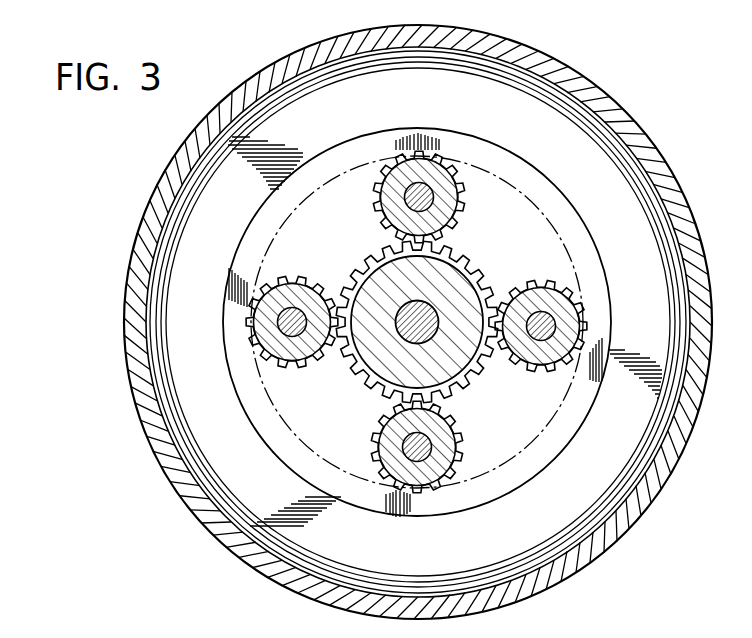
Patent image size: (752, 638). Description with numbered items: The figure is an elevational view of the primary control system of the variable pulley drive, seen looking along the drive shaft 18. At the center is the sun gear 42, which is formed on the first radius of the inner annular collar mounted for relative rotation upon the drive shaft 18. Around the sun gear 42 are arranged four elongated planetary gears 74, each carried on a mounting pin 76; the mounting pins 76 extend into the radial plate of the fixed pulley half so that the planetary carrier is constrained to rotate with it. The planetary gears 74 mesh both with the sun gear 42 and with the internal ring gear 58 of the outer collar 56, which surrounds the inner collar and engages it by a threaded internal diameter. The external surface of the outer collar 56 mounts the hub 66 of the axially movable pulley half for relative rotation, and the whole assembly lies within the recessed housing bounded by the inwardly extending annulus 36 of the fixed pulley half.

The drive shaft 18 is at (409, 292).
The inwardly extending annulus 36 is at (552, 62).
The sun gear 42 is at (362, 266).
The outer collar 56 is at (590, 247).
The internal ring gear 58 is at (573, 377).
The hub 66 is at (535, 148).
The planetary gears 74 is at (530, 287).
The mounting pins 76 is at (448, 437).